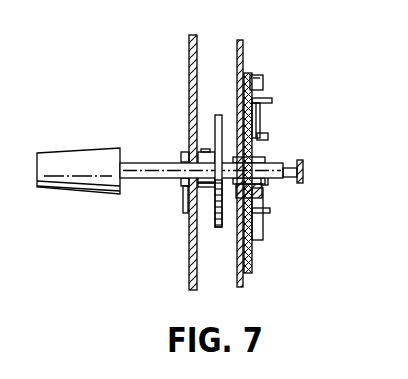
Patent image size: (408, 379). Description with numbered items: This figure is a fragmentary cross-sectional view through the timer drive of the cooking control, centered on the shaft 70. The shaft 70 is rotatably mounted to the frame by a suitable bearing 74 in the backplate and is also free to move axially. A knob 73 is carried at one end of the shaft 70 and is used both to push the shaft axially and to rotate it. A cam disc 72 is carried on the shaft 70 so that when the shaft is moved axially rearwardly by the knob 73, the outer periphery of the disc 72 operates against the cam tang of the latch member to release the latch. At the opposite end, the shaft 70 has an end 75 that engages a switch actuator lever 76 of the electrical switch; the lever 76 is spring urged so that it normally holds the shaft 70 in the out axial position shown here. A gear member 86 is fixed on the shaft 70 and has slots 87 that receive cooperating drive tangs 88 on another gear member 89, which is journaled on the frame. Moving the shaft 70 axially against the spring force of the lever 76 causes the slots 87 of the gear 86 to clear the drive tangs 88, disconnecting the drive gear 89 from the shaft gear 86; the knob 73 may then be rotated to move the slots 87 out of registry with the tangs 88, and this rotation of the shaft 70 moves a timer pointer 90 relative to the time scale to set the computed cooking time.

The shaft 70 is at (145, 162).
The cam disc 72 is at (226, 130).
The knob 73 is at (73, 158).
The bearing 74 is at (233, 187).
The shaft end 75 is at (292, 180).
The switch actuator lever 76 is at (303, 168).
The shaft gear member 86 is at (265, 226).
The slots 87 is at (263, 120).
The drive tangs 88 is at (268, 137).
The drive gear member 89 is at (256, 240).
The timer pointer 90 is at (184, 205).